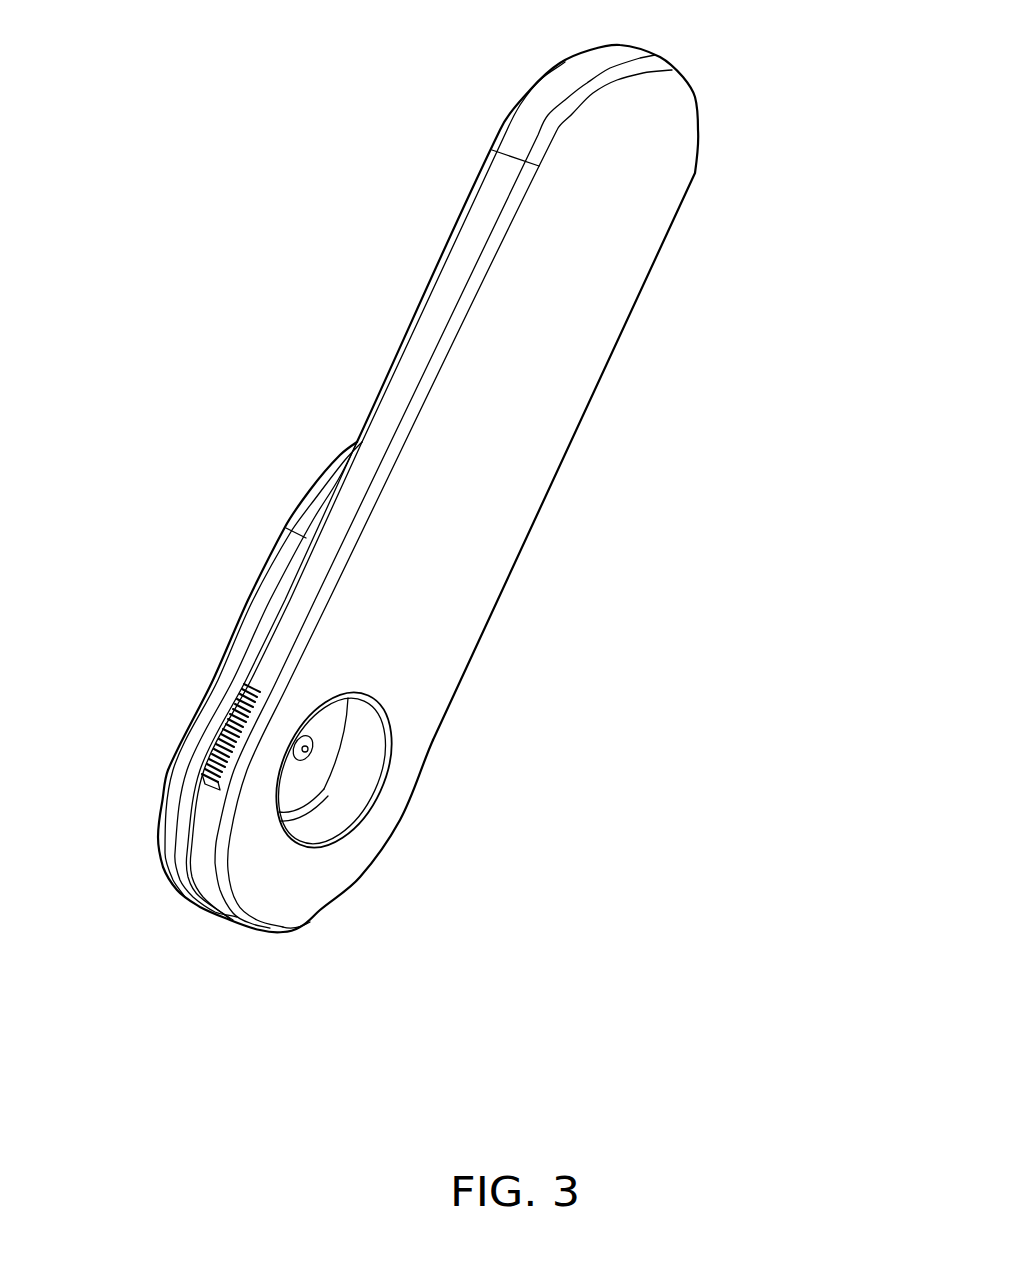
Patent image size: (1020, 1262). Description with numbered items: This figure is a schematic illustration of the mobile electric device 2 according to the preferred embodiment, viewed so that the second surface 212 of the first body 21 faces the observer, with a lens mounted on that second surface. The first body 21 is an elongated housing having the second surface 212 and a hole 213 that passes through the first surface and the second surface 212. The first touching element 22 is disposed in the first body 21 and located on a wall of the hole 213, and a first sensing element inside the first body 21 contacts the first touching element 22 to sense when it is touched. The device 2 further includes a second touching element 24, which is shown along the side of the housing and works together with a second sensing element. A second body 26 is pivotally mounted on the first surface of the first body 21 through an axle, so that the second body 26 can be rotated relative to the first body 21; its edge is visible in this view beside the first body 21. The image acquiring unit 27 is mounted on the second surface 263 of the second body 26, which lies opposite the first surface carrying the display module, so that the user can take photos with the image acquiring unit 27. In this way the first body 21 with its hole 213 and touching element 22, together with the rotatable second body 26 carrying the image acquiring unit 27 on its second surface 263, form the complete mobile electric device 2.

The mobile electric device 2 is at (132, 50).
The first body 21 is at (696, 164).
The second surface 212 is at (500, 520).
The hole 213 is at (328, 806).
The first touching element 22 is at (368, 733).
The second touching element 24 is at (243, 780).
The second body 26 is at (208, 708).
The image acquiring unit 27 is at (310, 752).
The second surface of the second body 263 is at (297, 786).